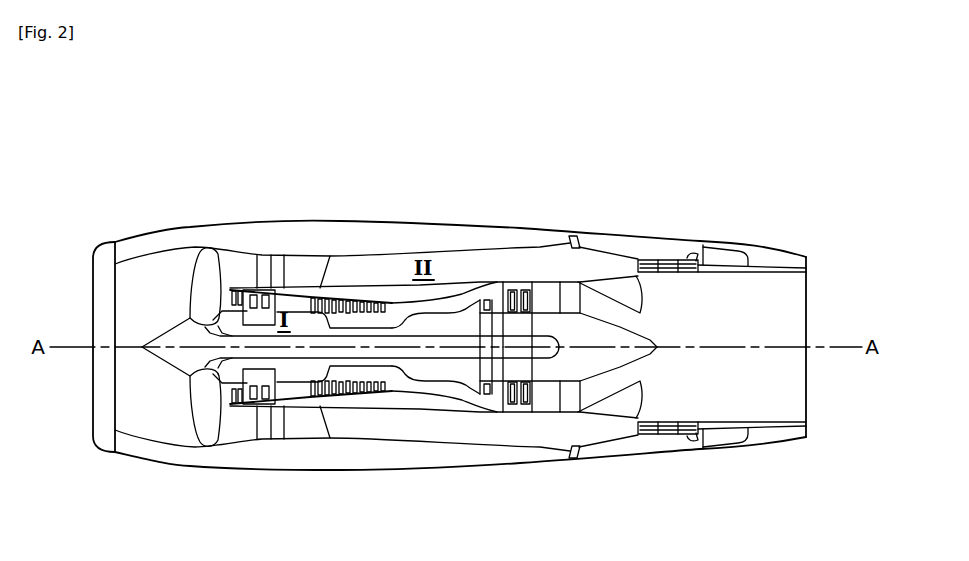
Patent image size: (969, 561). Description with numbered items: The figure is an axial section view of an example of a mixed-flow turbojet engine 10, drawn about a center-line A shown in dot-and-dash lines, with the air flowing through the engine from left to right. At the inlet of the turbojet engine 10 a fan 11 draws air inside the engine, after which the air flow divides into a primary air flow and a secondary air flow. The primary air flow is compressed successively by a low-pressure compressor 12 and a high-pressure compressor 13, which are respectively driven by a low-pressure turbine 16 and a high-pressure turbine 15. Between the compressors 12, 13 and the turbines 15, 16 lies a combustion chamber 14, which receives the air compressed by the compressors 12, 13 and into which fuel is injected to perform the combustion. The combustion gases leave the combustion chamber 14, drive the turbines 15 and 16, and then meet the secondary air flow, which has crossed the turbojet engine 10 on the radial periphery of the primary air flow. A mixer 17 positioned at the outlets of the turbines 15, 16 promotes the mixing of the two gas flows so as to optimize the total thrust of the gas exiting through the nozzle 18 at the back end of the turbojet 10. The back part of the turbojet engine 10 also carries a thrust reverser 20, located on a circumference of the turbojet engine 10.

The mixed-flow turbojet engine 10 is at (160, 131).
The fan 11 is at (203, 432).
The low-pressure compressor 12 is at (260, 428).
The high-pressure compressor 13 is at (357, 393).
The combustion chamber 14 is at (444, 307).
The high-pressure turbine 15 is at (489, 412).
The low-pressure turbine 16 is at (513, 420).
The mixer 17 is at (614, 287).
The nozzle 18 is at (768, 418).
The thrust reverser 20 is at (690, 220).